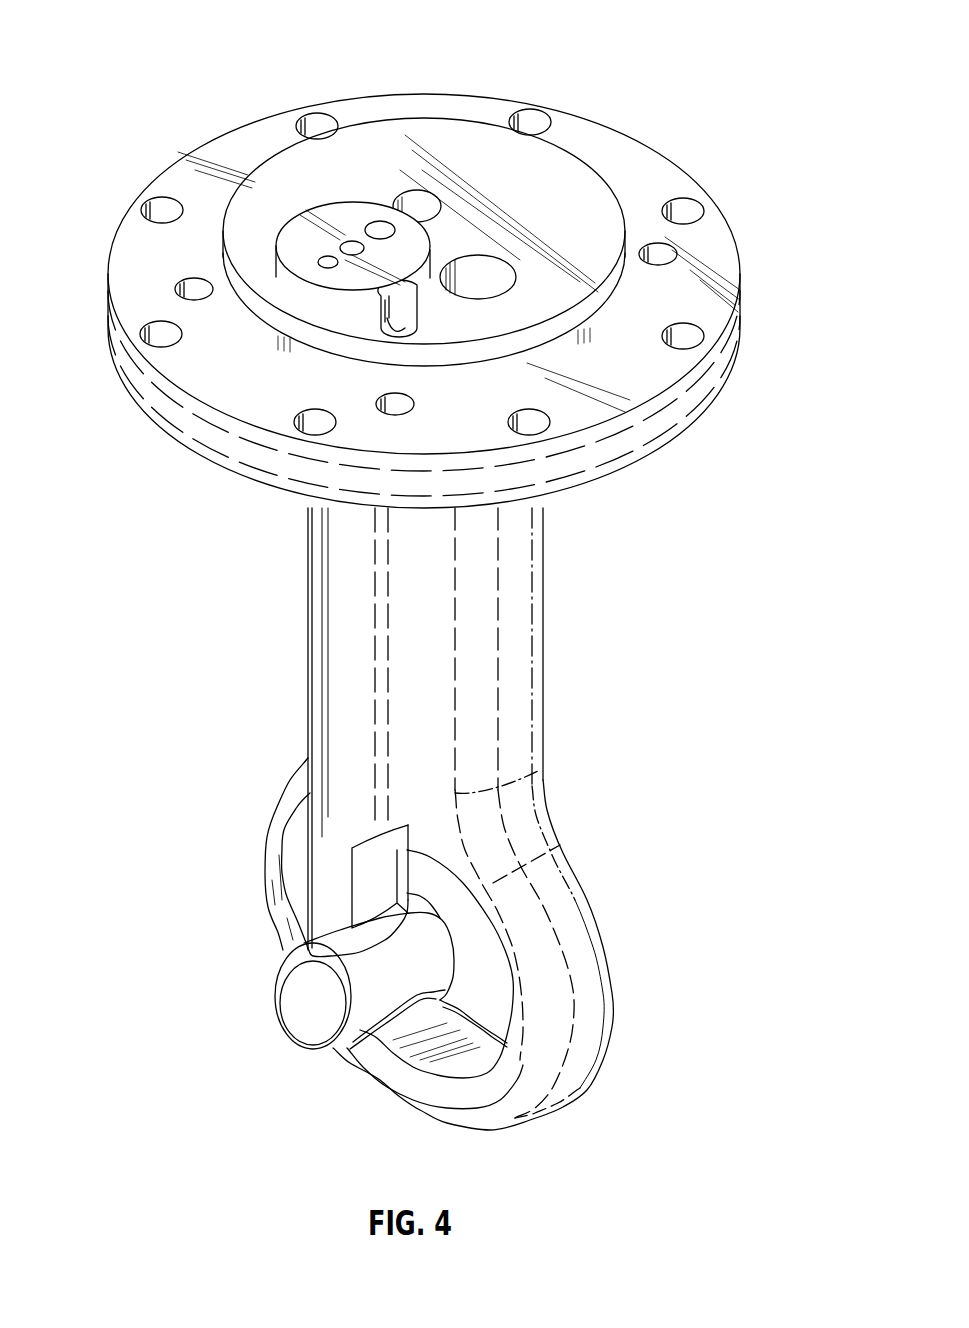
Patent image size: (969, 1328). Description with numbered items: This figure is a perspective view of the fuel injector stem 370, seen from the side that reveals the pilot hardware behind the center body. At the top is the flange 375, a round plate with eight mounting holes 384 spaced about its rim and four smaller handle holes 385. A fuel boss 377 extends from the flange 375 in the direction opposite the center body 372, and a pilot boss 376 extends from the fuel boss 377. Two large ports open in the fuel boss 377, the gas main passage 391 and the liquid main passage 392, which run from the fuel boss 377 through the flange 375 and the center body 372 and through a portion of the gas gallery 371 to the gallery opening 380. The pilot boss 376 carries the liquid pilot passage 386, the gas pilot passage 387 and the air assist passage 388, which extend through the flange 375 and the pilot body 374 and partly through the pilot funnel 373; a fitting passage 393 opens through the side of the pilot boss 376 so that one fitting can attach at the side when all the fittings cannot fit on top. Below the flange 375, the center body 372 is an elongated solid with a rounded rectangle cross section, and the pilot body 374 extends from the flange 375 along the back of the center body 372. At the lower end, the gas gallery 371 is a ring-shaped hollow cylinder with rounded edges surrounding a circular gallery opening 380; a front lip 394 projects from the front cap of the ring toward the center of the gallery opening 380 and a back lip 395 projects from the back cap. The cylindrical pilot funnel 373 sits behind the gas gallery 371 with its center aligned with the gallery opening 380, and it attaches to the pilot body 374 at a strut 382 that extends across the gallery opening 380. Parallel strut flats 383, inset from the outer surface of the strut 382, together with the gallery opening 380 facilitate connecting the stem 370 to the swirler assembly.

The stem 370 is at (133, 52).
The gas gallery 371 is at (600, 980).
The center body 372 is at (528, 675).
The pilot funnel 373 is at (332, 1048).
The pilot body 374 is at (318, 632).
The flange 375 is at (713, 370).
The pilot boss 376 is at (322, 283).
The fuel boss 377 is at (517, 190).
The gallery opening 380 is at (362, 1047).
The strut 382 is at (320, 903).
The strut flats 383 is at (360, 887).
The mounting holes 384 is at (695, 212).
The handle holes 385 is at (673, 256).
The liquid pilot passage 386 is at (352, 243).
The gas pilot passage 387 is at (375, 228).
The air assist passage 388 is at (322, 262).
The gas main passage 391 is at (480, 263).
The liquid main passage 392 is at (427, 198).
The fitting passage 393 is at (410, 308).
The front lip 394 is at (473, 1027).
The back lip 395 is at (432, 1072).